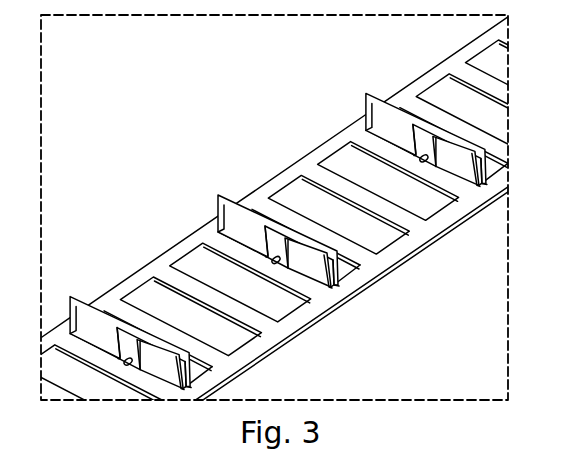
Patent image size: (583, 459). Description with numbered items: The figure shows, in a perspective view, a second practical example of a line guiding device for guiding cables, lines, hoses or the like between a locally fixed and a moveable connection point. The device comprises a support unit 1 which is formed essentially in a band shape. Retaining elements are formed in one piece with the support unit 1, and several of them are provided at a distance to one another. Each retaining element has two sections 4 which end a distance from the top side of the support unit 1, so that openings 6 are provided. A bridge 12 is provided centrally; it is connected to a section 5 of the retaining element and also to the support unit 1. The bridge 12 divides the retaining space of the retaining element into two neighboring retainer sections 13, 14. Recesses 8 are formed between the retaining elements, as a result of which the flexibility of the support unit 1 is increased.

The support unit 1 is at (431, 241).
The sections 4 is at (71, 318).
The section 5 is at (109, 315).
The openings 6 is at (183, 391).
The recesses 8 is at (283, 312).
The bridge 12 is at (128, 366).
The retainer section 13 is at (111, 345).
The retainer section 14 is at (174, 377).